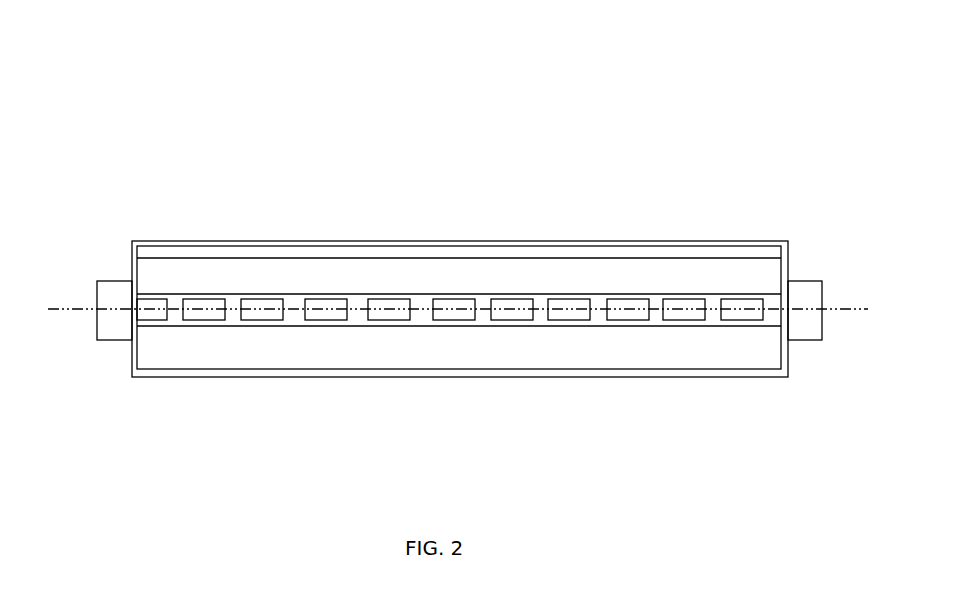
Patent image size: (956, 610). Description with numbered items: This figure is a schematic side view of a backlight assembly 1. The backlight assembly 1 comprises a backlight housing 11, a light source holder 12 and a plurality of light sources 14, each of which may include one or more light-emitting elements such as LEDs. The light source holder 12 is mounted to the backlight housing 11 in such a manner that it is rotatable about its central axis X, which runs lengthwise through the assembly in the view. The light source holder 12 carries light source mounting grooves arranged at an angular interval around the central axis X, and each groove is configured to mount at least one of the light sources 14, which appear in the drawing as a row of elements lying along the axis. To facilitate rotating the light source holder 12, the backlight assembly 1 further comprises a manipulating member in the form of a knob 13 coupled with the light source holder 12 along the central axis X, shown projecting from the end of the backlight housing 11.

The backlight assembly 1 is at (449, 270).
The backlight housing 11 is at (238, 384).
The light source holder 12 is at (666, 352).
The knob 13 is at (109, 287).
The light source 14 is at (386, 315).